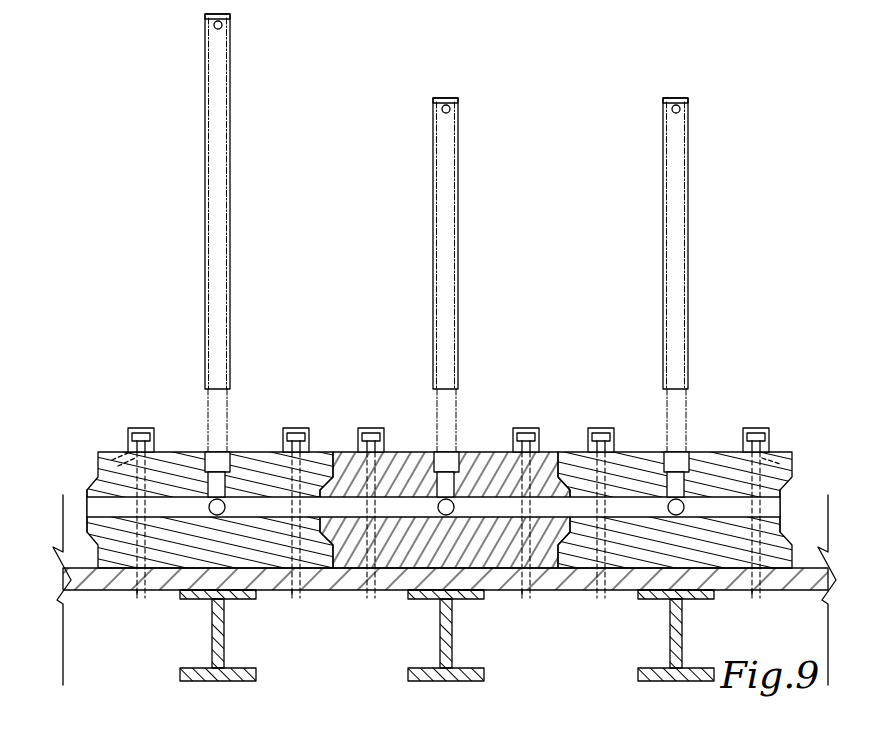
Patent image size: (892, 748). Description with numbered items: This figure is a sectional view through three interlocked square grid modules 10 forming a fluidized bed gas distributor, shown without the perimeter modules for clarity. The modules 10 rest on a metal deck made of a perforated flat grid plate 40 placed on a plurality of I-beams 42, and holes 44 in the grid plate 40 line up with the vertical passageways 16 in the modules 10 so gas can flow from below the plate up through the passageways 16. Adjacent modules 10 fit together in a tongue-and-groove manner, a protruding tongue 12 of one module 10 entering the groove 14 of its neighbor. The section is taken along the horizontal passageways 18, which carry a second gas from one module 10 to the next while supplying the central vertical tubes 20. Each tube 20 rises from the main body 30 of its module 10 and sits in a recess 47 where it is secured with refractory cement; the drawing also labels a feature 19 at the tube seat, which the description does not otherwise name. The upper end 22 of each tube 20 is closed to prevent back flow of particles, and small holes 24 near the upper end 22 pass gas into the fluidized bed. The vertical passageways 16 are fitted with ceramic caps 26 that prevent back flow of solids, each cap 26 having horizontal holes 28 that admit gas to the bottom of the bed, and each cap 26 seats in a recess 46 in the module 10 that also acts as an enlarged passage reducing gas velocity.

The square grid module 10 is at (96, 458).
The tongue 12 is at (88, 496).
The groove 14 is at (336, 452).
The vertical passageway 16 is at (86, 506).
The horizontal passageway 18 is at (224, 600).
The pin slot 19 is at (224, 482).
The vertical tube 20 is at (205, 226).
The upper end 22 is at (207, 17).
The small holes 24 is at (223, 25).
The cap 26 is at (139, 428).
The horizontal holes 28 is at (160, 422).
The main body 30 is at (206, 454).
The grid plate 40 is at (118, 590).
The I-beams 42 is at (212, 630).
The holes 44 is at (138, 600).
The recess 46 is at (124, 446).
The recess 47 is at (213, 500).